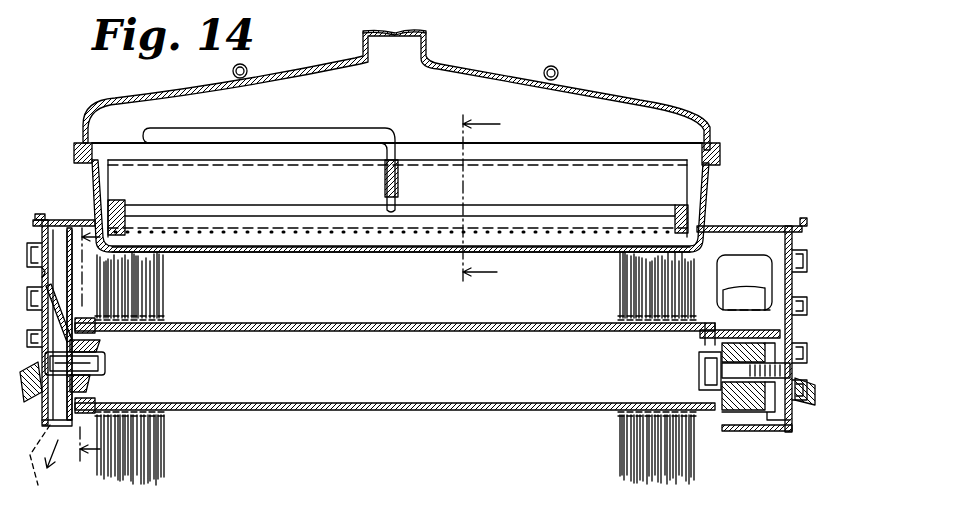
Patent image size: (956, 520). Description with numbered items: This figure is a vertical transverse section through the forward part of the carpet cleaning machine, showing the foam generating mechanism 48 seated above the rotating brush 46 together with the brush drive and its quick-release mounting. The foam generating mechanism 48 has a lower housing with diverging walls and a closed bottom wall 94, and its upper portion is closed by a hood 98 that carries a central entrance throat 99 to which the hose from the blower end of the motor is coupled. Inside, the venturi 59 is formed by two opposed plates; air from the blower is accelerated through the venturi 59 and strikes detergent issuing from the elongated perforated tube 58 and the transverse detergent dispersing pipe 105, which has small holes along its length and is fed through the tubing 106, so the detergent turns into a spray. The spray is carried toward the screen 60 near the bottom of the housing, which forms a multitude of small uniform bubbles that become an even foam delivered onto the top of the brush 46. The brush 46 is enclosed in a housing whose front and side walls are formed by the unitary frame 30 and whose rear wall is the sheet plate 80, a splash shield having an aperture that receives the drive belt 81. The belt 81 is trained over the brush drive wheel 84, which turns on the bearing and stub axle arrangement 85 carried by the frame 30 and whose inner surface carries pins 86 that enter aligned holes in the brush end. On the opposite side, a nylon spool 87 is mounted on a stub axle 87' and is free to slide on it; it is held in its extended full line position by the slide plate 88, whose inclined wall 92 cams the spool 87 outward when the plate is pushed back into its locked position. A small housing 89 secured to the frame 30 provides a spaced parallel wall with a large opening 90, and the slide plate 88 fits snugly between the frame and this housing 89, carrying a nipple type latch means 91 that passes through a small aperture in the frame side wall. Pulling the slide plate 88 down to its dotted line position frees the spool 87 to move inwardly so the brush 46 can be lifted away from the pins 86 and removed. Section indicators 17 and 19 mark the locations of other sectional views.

The hood 98 is at (190, 100).
The central entrance throat 99 is at (362, 43).
The foam generating mechanism 48 is at (88, 176).
The venturi 59 is at (245, 178).
The elongated perforated tube 58 is at (300, 208).
The tubing 106 is at (372, 127).
The detergent dispersing pipe 105 is at (592, 196).
The section line 17 is at (497, 200).
The unitary frame 30 is at (803, 224).
The brush drive wheel 84 is at (788, 322).
The drive belt 81 is at (762, 270).
The pins 86 is at (712, 340).
The bearing and stub axle arrangement 85 is at (730, 372).
The sheet plate 80 is at (592, 291).
The brush 46 is at (118, 468).
The small housing 89 is at (60, 252).
The nipple type latch means 91 is at (42, 275).
The large opening 90 is at (70, 332).
The inclined wall 92 is at (68, 292).
The nylon spool 87 is at (116, 362).
The stub axle 87' is at (107, 365).
The slide plate 88 is at (44, 427).
The section line 19 is at (78, 343).
The closed bottom wall 94 is at (230, 248).
The screen 60 is at (290, 245).